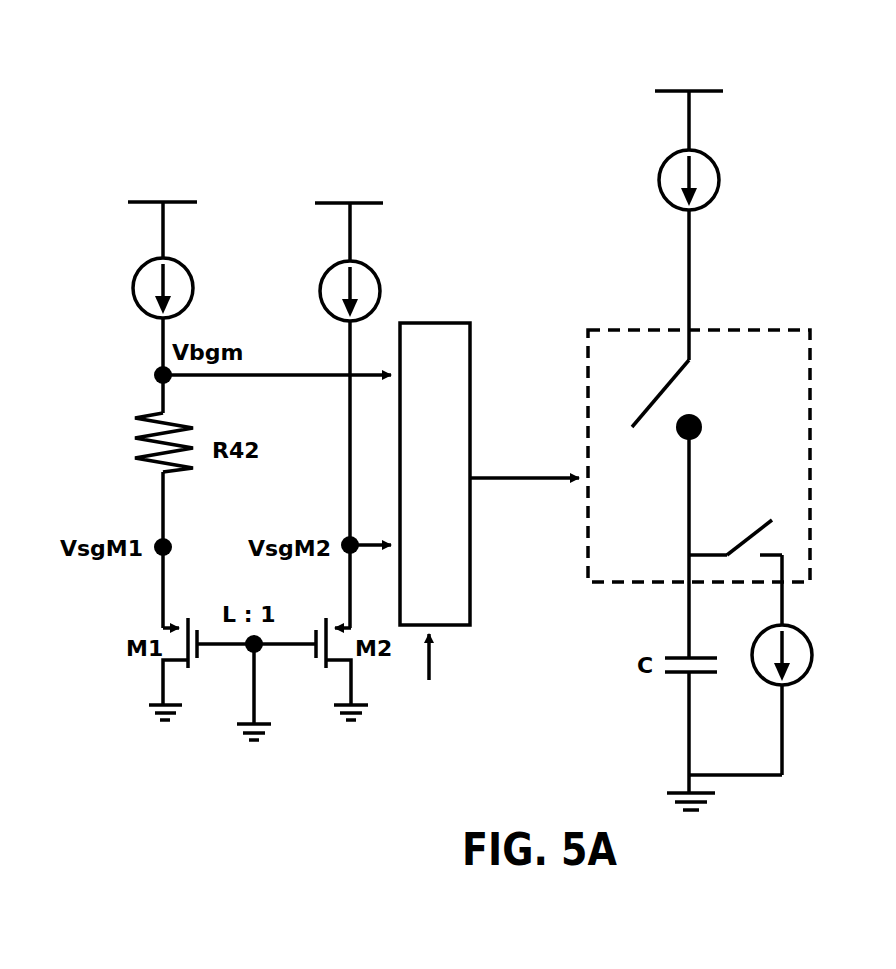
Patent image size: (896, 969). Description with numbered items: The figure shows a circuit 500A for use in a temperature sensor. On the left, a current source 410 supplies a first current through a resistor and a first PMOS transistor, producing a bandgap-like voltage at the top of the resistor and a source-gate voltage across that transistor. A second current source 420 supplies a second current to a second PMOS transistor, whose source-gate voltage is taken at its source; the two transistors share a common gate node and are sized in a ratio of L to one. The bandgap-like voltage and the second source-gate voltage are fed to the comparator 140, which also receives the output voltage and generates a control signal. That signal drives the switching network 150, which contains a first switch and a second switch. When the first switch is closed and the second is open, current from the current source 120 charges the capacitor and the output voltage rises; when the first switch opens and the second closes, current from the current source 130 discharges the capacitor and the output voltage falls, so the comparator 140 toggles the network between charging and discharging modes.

The current source 410 is at (143, 266).
The current source 420 is at (330, 266).
The comparator 140 is at (470, 582).
The current source 120 is at (663, 163).
The switching network 150 is at (785, 326).
The current source 130 is at (808, 633).
The circuit 500A is at (782, 68).